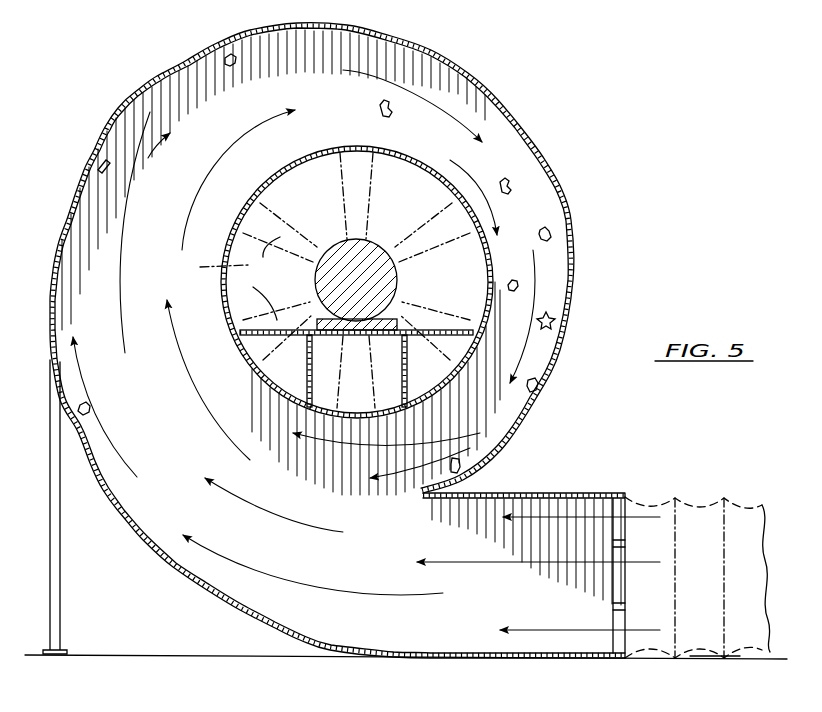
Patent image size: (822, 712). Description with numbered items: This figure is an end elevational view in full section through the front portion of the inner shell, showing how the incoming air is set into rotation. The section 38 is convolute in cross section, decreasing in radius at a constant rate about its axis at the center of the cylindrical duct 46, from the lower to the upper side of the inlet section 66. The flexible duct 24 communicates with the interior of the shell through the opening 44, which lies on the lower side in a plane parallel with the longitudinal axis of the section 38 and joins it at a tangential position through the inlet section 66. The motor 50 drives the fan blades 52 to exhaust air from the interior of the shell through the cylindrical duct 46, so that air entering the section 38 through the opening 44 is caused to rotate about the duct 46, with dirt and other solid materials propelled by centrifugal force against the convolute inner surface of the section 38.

The section 38 is at (517, 123).
The cylindrical duct 46 is at (310, 149).
The motor 50 is at (365, 262).
The fan blades 52 is at (248, 267).
The inlet section 66 is at (531, 492).
The opening 44 is at (618, 562).
The flexible duct 24 is at (697, 645).